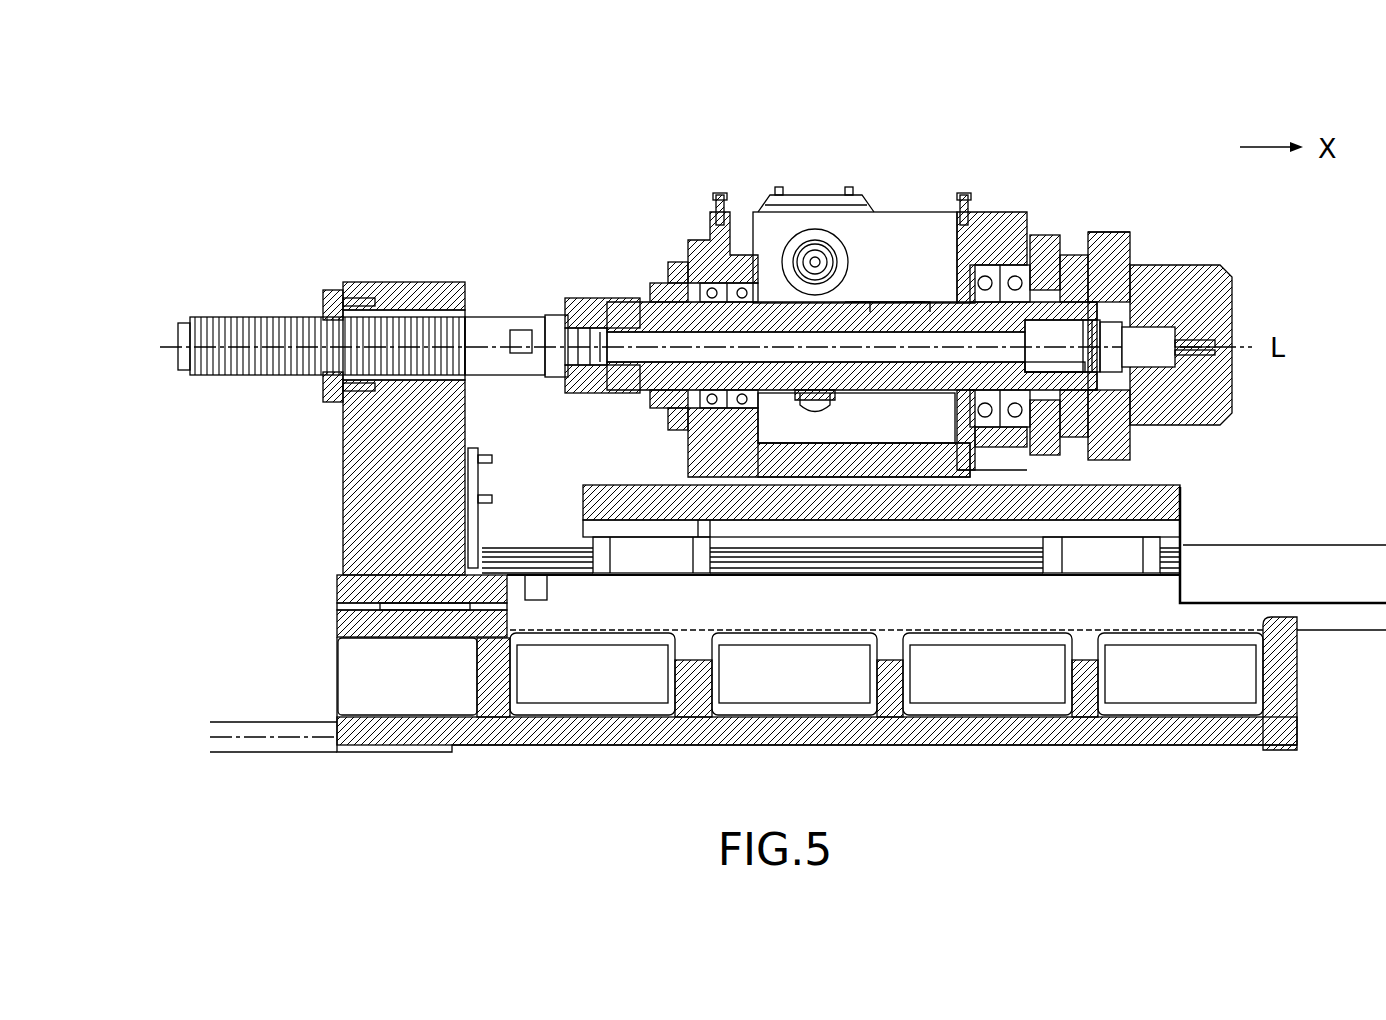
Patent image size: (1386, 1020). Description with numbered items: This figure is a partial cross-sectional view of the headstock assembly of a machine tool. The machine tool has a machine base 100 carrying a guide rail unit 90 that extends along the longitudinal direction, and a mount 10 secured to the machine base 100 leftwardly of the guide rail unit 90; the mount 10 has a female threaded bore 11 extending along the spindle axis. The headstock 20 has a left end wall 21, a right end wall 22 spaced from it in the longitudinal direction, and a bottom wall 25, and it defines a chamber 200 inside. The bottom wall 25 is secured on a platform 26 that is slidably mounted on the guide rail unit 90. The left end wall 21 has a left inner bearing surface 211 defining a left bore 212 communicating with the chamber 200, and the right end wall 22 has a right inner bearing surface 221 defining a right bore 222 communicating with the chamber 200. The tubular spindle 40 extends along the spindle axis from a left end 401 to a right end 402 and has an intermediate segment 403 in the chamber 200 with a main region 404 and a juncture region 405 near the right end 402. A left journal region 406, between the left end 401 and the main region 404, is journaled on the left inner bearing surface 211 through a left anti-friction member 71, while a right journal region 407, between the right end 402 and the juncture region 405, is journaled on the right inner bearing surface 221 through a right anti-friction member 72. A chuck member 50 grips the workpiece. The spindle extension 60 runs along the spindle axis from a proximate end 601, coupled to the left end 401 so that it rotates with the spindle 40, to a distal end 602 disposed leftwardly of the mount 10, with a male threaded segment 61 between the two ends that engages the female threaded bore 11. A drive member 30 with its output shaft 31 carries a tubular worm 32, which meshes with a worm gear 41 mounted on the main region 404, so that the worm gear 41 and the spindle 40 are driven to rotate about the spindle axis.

The mount 10 is at (400, 270).
The female threaded bore 11 is at (383, 288).
The headstock 20 is at (1110, 158).
The left end wall 21 is at (697, 232).
The right end wall 22 is at (978, 228).
The bottom wall 25 is at (930, 447).
The platform 26 is at (1160, 507).
The drive member 30 is at (816, 185).
The motor shaft 31 is at (799, 185).
The tubular worm 32 is at (816, 262).
The spindle 40 is at (851, 400).
The worm gear 41 is at (818, 402).
The chuck member 50 is at (1222, 265).
The spindle extension 60 is at (346, 297).
The male threaded segment 61 is at (438, 326).
The left anti-friction member 71 is at (690, 252).
The right anti-friction member 72 is at (1008, 450).
The guide rail unit 90 is at (1047, 572).
The machine base 100 is at (379, 764).
The chamber 200 is at (928, 232).
The left inner bearing surface 211 is at (735, 275).
The left bore 212 is at (737, 300).
The right inner bearing surface 221 is at (1036, 267).
The right bore 222 is at (1003, 228).
The left end 401 is at (630, 323).
The right end 402 is at (1098, 255).
The intermediate segment 403 is at (927, 92).
The main region 404 is at (852, 302).
The juncture region 405 is at (913, 302).
The left journal region 406 is at (658, 407).
The right journal region 407 is at (1013, 370).
The proximate end 601 is at (555, 322).
The distal end 602 is at (187, 325).